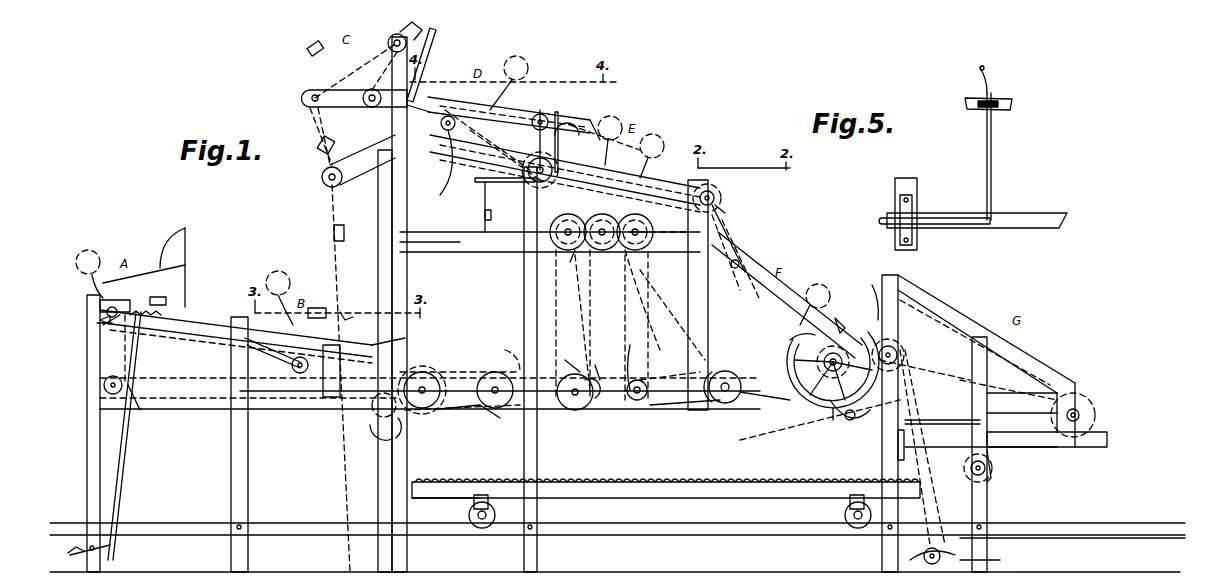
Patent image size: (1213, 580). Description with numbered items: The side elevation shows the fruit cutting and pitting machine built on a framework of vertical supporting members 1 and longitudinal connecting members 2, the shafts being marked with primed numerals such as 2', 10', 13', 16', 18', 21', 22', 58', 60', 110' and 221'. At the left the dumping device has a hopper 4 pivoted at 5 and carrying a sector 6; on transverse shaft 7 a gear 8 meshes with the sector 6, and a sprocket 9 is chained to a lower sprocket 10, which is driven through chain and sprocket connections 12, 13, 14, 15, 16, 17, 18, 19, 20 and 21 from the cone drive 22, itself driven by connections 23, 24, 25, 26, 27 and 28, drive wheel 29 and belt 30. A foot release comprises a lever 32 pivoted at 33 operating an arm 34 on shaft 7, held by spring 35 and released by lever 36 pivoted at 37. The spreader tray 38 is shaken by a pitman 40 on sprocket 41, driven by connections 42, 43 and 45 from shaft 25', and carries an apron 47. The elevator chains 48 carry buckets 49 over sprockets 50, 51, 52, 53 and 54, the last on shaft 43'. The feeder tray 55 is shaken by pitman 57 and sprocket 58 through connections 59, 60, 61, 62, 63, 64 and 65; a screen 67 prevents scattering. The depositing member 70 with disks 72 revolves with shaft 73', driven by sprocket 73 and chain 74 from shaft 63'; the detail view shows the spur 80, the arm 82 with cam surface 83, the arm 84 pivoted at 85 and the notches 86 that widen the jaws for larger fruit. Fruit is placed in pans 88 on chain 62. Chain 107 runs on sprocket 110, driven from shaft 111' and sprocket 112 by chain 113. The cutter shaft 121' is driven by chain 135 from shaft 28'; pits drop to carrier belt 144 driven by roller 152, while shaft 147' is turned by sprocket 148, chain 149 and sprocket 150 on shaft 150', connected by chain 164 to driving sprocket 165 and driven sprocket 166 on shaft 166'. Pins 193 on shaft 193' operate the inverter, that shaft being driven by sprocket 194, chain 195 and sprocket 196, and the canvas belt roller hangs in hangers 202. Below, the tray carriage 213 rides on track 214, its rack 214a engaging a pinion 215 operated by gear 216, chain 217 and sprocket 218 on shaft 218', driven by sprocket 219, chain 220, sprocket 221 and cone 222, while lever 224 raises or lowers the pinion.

In FIG. 1, the vertical supporting members 1 is at (87, 463).
In FIG. 1, the longitudinally positioned connecting members 2 is at (550, 251).
In FIG. 1, the cross bar 2' is at (430, 256).
In FIG. 1, the hopper 4 is at (180, 273).
In FIG. 1, the hopper pivot 5 is at (167, 301).
In FIG. 1, the sector 6 is at (160, 318).
In FIG. 1, the transverse shaft 7 is at (118, 306).
In FIG. 1, the gear 8 is at (97, 323).
In FIG. 1, the sprocket 9 is at (100, 326).
In FIG. 1, the lower sprocket 10 is at (140, 350).
In FIG. 1, the link pivot roller 10' is at (92, 387).
In FIG. 1, the chain and sprocket connection 12 is at (210, 395).
In FIG. 1, the chain and sprocket connection 13 is at (419, 376).
In FIG. 1, the roller rim 13' is at (431, 380).
In FIG. 1, the chain and sprocket connection 14 is at (430, 368).
In FIG. 1, the chain and sprocket connection 15 is at (462, 412).
In FIG. 1, the chain and sprocket connection 16 is at (490, 422).
In FIG. 1, the belt roller 16' is at (495, 377).
In FIG. 1, the chain and sprocket connection 17 is at (510, 349).
In FIG. 1, the chain and sprocket connection 18 is at (567, 403).
In FIG. 1, the roller arm 18' is at (571, 357).
In FIG. 1, the chain and sprocket connection 19 is at (603, 365).
In FIG. 1, the chain and sprocket connection 20 is at (587, 310).
In FIG. 1, the sprocket 21 is at (565, 204).
In FIG. 1, the roller 21' is at (567, 224).
In FIG. 1, the cone drive 22 is at (570, 325).
In FIG. 1, the chute plate 22' is at (599, 325).
In FIG. 1, the chain and sprocket connection 23 is at (598, 218).
In FIG. 1, the chain and sprocket connection 24 is at (652, 262).
In FIG. 1, the chain and sprocket connection 25 is at (715, 405).
In FIG. 1, the shaft 25' is at (670, 371).
In FIG. 1, the chain and sprocket connection 26 is at (726, 410).
In FIG. 1, the chain and sprocket connection 27 is at (770, 402).
In FIG. 1, the chain and sprocket connection 28 is at (826, 357).
In FIG. 1, the shaft 28' is at (795, 330).
In FIG. 1, the drive wheel 29 is at (833, 415).
In FIG. 1, the belt 30 is at (815, 400).
In FIG. 1, the lever 32 is at (125, 452).
In FIG. 1, the lever pivot 33 is at (135, 412).
In FIG. 1, the arm 34 is at (105, 328).
In FIG. 1, the spring 35 is at (89, 274).
In FIG. 1, the lever 36 is at (95, 548).
In FIG. 1, the lever pivot 37 is at (100, 551).
In FIG. 1, the tray 38 is at (279, 298).
In FIG. 1, the pitman 40 is at (258, 352).
In FIG. 1, the sprocket 41 is at (292, 366).
In FIG. 1, the chain and sprocket connection 42 is at (310, 392).
In FIG. 1, the chain and sprocket connection 43 is at (359, 415).
In FIG. 1, the shaft 43' is at (373, 439).
In FIG. 1, the chain and sprocket connection 45 is at (440, 412).
In FIG. 1, the apron 47 is at (394, 337).
In FIG. 1, the chains 48 is at (345, 198).
In FIG. 1, the buckets 49 is at (345, 318).
In FIG. 1, the sprocket 50 is at (322, 177).
In FIG. 1, the sprocket 51 is at (306, 98).
In FIG. 1, the sprocket 52 is at (392, 40).
In FIG. 1, the sprocket 53 is at (370, 89).
In FIG. 1, the sprocket 54 is at (397, 438).
In FIG. 1, the tray 55 is at (509, 83).
In FIG. 1, the pitman 57 is at (425, 100).
In FIG. 1, the sprocket 58 is at (432, 128).
In FIG. 1, the belt 58' is at (435, 164).
In FIG. 1, the chain and sprocket connection 59 is at (487, 140).
In FIG. 1, the chain and sprocket connection 60 is at (505, 155).
In FIG. 1, the roller 60' is at (525, 179).
In FIG. 1, the chain and sprocket connection 61 is at (484, 184).
In FIG. 1, the chain 62 is at (652, 156).
In FIG. 1, the chain and sprocket connection 63 is at (720, 194).
In FIG. 1, the shaft 63' is at (715, 177).
In FIG. 1, the chain and sprocket connection 64 is at (722, 203).
In FIG. 1, the chain and sprocket connection 65 is at (722, 224).
In FIG. 1, the screen 67 is at (428, 65).
In FIG. 1, the depositing member 70 is at (567, 122).
In FIG. 1, the disks 72 is at (545, 115).
In FIG. 1, the sprocket 73 is at (509, 112).
In FIG. 1, the shaft 73' is at (591, 125).
In FIG. 1, the chain 74 is at (610, 130).
In FIG. 5, the spur 80 is at (986, 68).
In FIG. 5, the arm 82 is at (992, 162).
In FIG. 5, the cam surface 83 is at (993, 98).
In FIG. 5, the arm 84 is at (922, 220).
In FIG. 5, the arm pivot 85 is at (960, 220).
In FIG. 5, the notches 86 is at (900, 212).
In FIG. 1, the pan 88 is at (610, 140).
In FIG. 1, the chain 107 is at (816, 304).
In FIG. 1, the sprocket 110 is at (792, 295).
In FIG. 1, the chute end 110' is at (842, 319).
In FIG. 1, the shaft 111' is at (753, 263).
In FIG. 1, the sprocket 112 is at (735, 240).
In FIG. 1, the chain 113 is at (700, 316).
In FIG. 1, the shaft 121' is at (925, 362).
In FIG. 1, the chain 135 is at (865, 300).
In FIG. 1, the carrier belt 144 is at (915, 430).
In FIG. 1, the shaft 147' is at (820, 431).
In FIG. 1, the sprocket 148 is at (852, 421).
In FIG. 1, the chain 149 is at (970, 345).
In FIG. 1, the sprocket 150 is at (1032, 385).
In FIG. 1, the shaft 150' is at (1008, 369).
In FIG. 1, the roller 152 is at (1047, 441).
In FIG. 1, the chain 164 is at (1020, 390).
In FIG. 1, the driving sprocket 165 is at (905, 300).
In FIG. 1, the driven sprocket 166 is at (1095, 415).
In FIG. 1, the shaft 166' is at (1091, 395).
In FIG. 1, the pins 193 is at (617, 524).
In FIG. 1, the shaft 193' is at (993, 558).
In FIG. 1, the sprocket 194 is at (922, 557).
In FIG. 1, the chain 195 is at (898, 460).
In FIG. 1, the sprocket 196 is at (900, 348).
In FIG. 1, the hangers 202 is at (912, 408).
In FIG. 1, the carriage 213 is at (802, 497).
In FIG. 1, the track 214 is at (665, 498).
In FIG. 1, the rack 214a is at (501, 509).
In FIG. 1, the pinion 215 is at (960, 470).
In FIG. 1, the gear 216 is at (992, 485).
In FIG. 1, the chain 217 is at (690, 412).
In FIG. 1, the sprocket 218 is at (635, 406).
In FIG. 1, the shaft 218' is at (599, 404).
In FIG. 1, the sprocket 219 is at (638, 356).
In FIG. 1, the chain 220 is at (628, 322).
In FIG. 1, the sprocket 221 is at (662, 326).
In FIG. 1, the shaft 221' is at (660, 242).
In FIG. 1, the cone 222 is at (652, 228).
In FIG. 1, the lever 224 is at (990, 470).